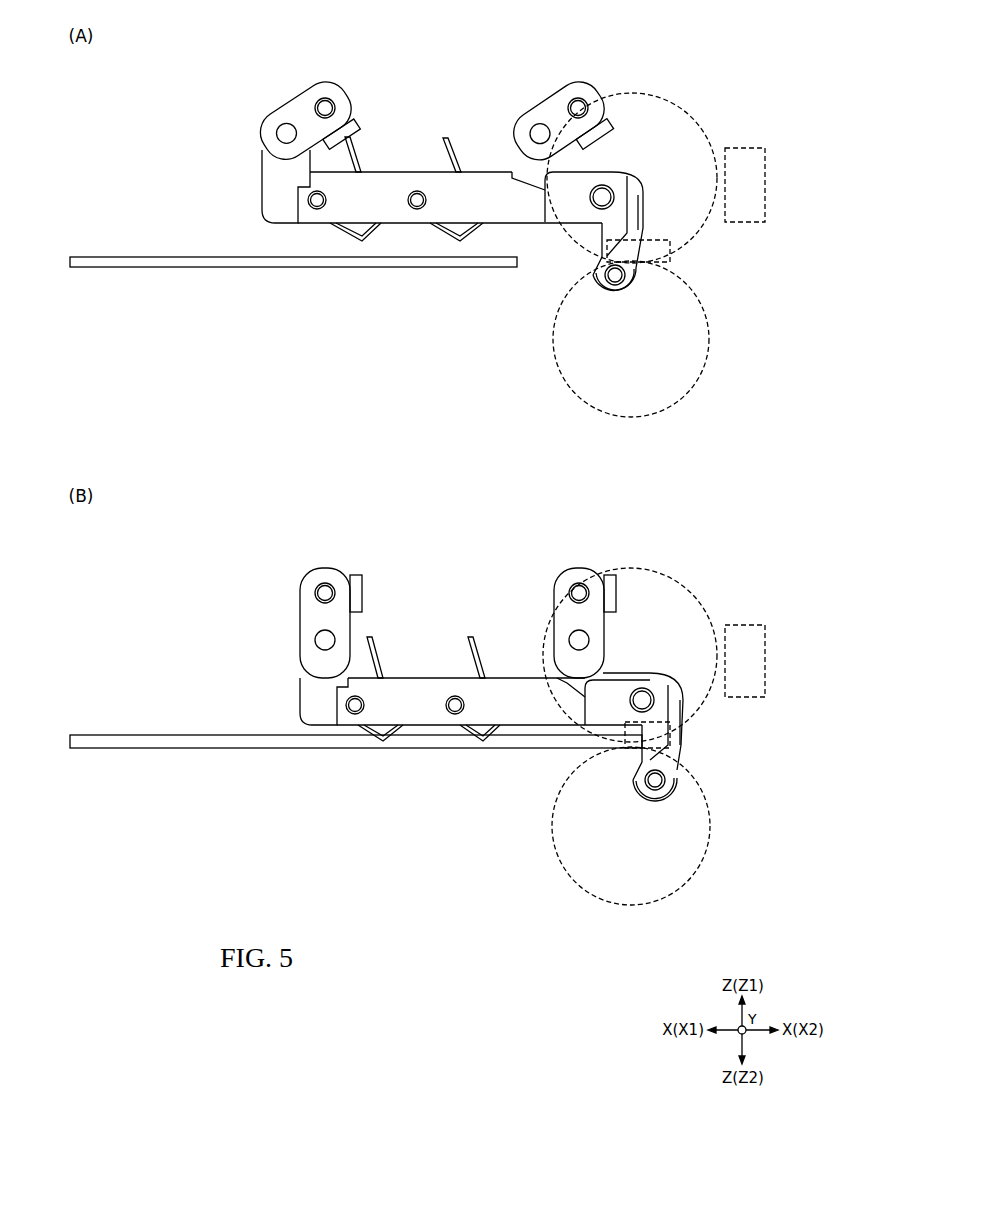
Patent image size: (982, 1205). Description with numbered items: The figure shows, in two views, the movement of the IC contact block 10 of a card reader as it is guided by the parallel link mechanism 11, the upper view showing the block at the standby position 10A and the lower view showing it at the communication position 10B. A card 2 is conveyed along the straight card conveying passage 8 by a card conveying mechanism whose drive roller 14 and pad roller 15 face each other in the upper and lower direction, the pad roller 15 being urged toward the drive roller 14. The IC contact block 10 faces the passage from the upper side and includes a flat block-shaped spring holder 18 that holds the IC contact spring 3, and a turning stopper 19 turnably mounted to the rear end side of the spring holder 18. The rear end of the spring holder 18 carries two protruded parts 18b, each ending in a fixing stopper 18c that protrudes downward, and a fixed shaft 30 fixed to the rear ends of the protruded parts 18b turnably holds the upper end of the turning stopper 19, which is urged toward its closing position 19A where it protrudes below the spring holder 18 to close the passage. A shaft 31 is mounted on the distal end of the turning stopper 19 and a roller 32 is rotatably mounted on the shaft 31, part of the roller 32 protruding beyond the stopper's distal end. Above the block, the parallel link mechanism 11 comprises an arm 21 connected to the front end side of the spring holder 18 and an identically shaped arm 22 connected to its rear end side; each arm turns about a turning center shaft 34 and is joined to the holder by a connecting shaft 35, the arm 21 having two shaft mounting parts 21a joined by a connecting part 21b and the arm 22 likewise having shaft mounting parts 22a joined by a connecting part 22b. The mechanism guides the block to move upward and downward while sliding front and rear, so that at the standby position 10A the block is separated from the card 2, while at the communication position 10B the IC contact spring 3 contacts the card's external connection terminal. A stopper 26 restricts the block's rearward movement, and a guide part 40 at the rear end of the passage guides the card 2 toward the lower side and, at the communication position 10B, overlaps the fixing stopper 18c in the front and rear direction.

In FIG. 5A, the card 2 is at (186, 268).
In FIG. 5B, the card 2 is at (202, 750).
In FIG. 5A, the IC contact spring 3 is at (363, 242).
In FIG. 5B, the IC contact spring 3 is at (385, 743).
In FIG. 5A, the card conveying passage 8 is at (293, 251).
In FIG. 5B, the card conveying passage 8 is at (356, 736).
In FIG. 5A, the IC contact block 10 is at (410, 165).
In FIG. 5B, the IC contact block 10 is at (465, 669).
In FIG. 5A, the standby position 10A is at (404, 171).
In FIG. 5B, the communication position 10B is at (430, 677).
In FIG. 5A, the parallel link mechanism 11 is at (499, 184).
In FIG. 5B, the parallel link mechanism 11 is at (503, 673).
In FIG. 5A, the drive roller 14 is at (690, 110).
In FIG. 5B, the drive roller 14 is at (692, 592).
In FIG. 5A, the pad roller 15 is at (708, 340).
In FIG. 5B, the pad roller 15 is at (711, 828).
In FIG. 5A, the spring holder 18 is at (480, 232).
In FIG. 5B, the spring holder 18 is at (532, 742).
In FIG. 5A, the protruded part 18b is at (644, 205).
In FIG. 5B, the protruded part 18b is at (679, 709).
In FIG. 5A, the fixing stopper 18c is at (598, 241).
In FIG. 5B, the fixing stopper 18c is at (640, 766).
In FIG. 5A, the turning stopper 19 is at (690, 257).
In FIG. 5B, the turning stopper 19 is at (710, 766).
In FIG. 5A, the closing position 19A is at (623, 257).
In FIG. 5B, the closing position 19A is at (661, 766).
In FIG. 5A, the arm 21 is at (327, 113).
In FIG. 5B, the arm 21 is at (323, 620).
In FIG. 5A, the shaft mounting part 21a is at (306, 120).
In FIG. 5B, the shaft mounting part 21a is at (325, 623).
In FIG. 5A, the connecting part 21b is at (352, 122).
In FIG. 5B, the connecting part 21b is at (364, 592).
In FIG. 5A, the arm 22 is at (576, 111).
In FIG. 5B, the arm 22 is at (576, 623).
In FIG. 5A, the shaft mounting part 22a is at (559, 120).
In FIG. 5B, the shaft mounting part 22a is at (579, 623).
In FIG. 5A, the connecting part 22b is at (602, 118).
In FIG. 5B, the connecting part 22b is at (618, 598).
In FIG. 5A, the stopper 26 is at (766, 176).
In FIG. 5B, the stopper 26 is at (766, 656).
In FIG. 5A, the fixed shaft 30 is at (608, 187).
In FIG. 5B, the fixed shaft 30 is at (650, 690).
In FIG. 5A, the shaft 31 is at (612, 286).
In FIG. 5B, the shaft 31 is at (652, 792).
In FIG. 5A, the roller 32 is at (630, 292).
In FIG. 5B, the roller 32 is at (672, 797).
In FIG. 5A, the turning center shaft 34 is at (327, 97).
In FIG. 5B, the turning center shaft 34 is at (327, 583).
In FIG. 5A, the connecting shaft 35 is at (276, 129).
In FIG. 5B, the connecting shaft 35 is at (314, 640).
In FIG. 5A, the guide part 40 is at (678, 258).
In FIG. 5B, the guide part 40 is at (624, 746).